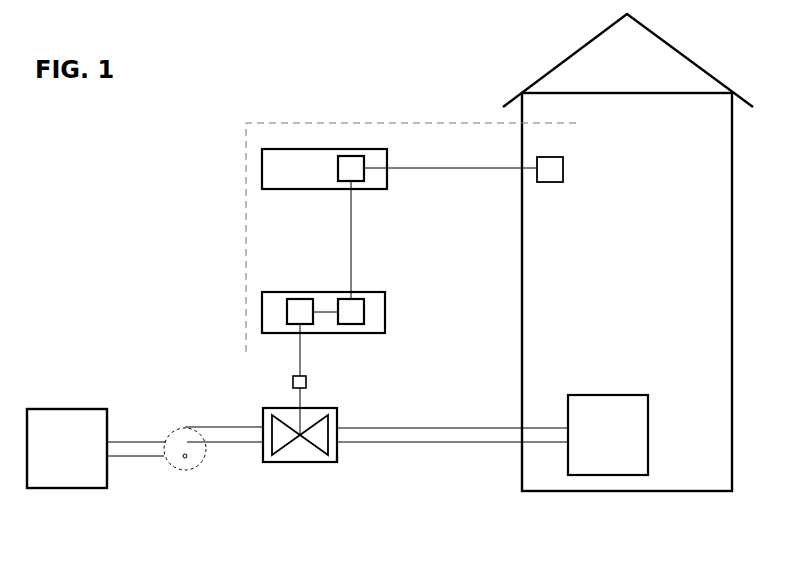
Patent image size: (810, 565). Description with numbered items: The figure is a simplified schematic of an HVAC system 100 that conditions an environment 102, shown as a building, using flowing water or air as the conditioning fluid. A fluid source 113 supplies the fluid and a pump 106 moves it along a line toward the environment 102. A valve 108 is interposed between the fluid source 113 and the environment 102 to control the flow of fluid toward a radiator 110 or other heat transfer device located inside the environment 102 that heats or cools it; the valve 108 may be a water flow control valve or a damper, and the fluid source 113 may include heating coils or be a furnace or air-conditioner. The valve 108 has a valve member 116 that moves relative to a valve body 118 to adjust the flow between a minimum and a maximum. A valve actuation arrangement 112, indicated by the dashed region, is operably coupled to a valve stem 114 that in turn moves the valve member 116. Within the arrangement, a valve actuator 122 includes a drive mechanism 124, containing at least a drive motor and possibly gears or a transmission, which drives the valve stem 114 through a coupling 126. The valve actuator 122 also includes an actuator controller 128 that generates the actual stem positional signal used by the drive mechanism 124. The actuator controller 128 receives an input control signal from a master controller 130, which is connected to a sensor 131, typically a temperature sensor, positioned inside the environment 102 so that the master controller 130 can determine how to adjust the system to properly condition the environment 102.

The HVAC system 100 is at (240, 62).
The environment 102 is at (692, 468).
The pump 106 is at (195, 470).
The valve 108 is at (286, 462).
The radiator 110 is at (632, 395).
The valve actuation arrangement 112 is at (293, 122).
The fluid source 113 is at (45, 409).
The valve stem 114 is at (300, 405).
The valve member 116 is at (272, 420).
The valve body 118 is at (337, 456).
The valve actuator 122 is at (272, 292).
The drive mechanism 124 is at (288, 314).
The coupling 126 is at (292, 383).
The actuator controller 128 is at (365, 307).
The master controller 130 is at (272, 149).
The sensor 131 is at (563, 168).